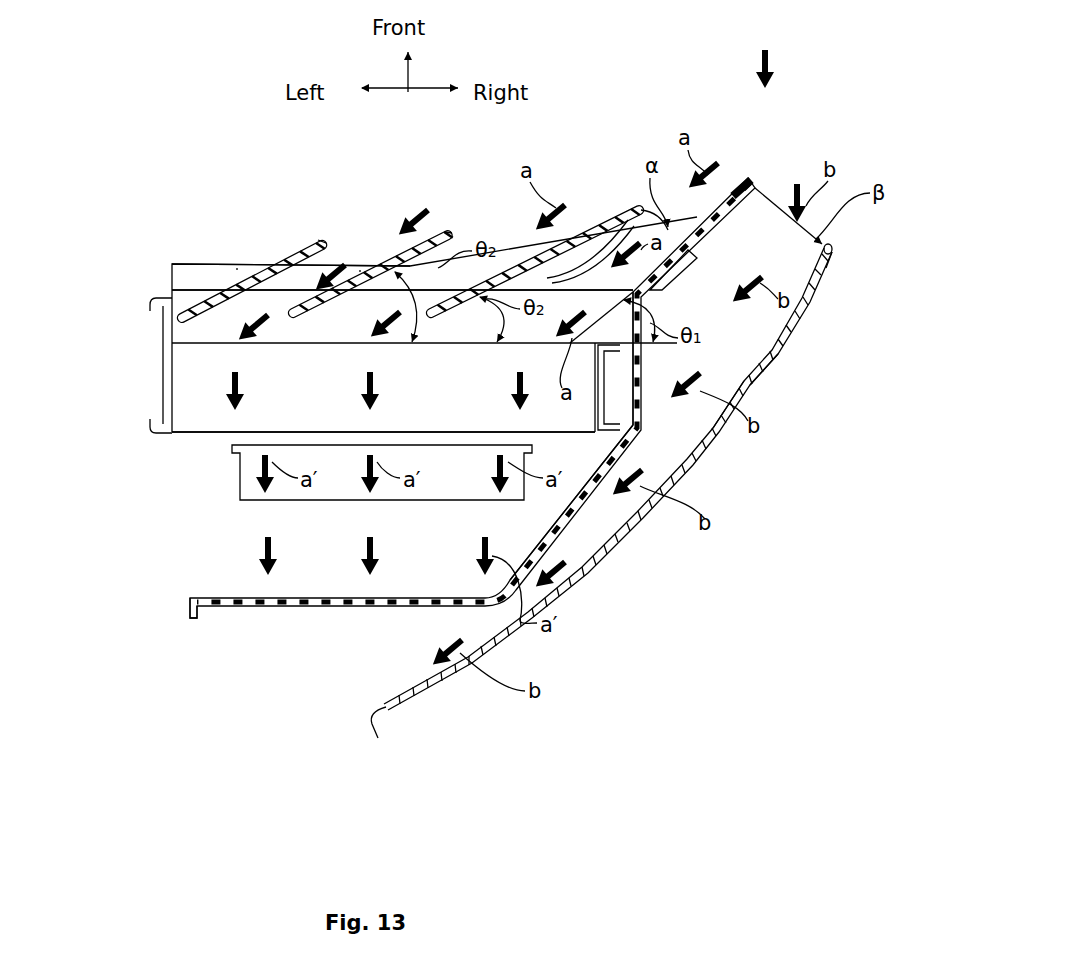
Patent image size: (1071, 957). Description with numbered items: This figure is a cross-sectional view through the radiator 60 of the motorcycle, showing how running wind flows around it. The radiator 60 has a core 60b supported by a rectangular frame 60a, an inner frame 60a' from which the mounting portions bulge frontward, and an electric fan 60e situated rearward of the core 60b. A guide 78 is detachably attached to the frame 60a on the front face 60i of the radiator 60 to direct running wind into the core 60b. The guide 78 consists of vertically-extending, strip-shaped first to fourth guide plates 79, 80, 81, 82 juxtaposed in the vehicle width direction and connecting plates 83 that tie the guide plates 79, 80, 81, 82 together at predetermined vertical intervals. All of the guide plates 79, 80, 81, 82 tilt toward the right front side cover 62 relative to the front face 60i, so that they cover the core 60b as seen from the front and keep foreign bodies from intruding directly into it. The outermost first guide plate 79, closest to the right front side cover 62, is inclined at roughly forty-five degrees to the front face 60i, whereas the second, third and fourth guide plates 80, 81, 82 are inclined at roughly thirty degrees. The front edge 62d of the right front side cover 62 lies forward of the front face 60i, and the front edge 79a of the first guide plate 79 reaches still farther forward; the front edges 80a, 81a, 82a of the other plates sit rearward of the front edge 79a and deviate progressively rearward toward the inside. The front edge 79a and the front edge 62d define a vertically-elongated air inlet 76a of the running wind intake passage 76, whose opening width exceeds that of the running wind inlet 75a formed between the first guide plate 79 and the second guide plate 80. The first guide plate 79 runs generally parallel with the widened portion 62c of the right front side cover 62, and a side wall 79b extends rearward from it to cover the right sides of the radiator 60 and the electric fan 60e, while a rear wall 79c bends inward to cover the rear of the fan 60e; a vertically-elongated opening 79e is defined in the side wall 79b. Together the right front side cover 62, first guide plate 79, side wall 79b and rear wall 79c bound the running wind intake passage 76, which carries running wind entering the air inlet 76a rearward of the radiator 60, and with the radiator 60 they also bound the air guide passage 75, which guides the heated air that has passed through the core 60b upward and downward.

The radiator 60 is at (158, 410).
The frame 60a is at (645, 387).
The inner frame 60a' is at (113, 365).
The core 60b is at (182, 438).
The electric fan 60e is at (250, 501).
The front face 60i is at (327, 341).
The right front side cover 62 is at (700, 455).
The widened portion 62c is at (797, 329).
The front edge 62d is at (838, 248).
The air guide passage 75 is at (312, 572).
The running wind inlet 75a is at (590, 254).
The running wind intake passage 76 is at (750, 376).
The air inlet 76a is at (838, 268).
The guide 78 is at (204, 260).
The first guide plate 79 is at (745, 177).
The front edge 79a is at (757, 184).
The side wall 79b is at (632, 490).
The rear wall 79c is at (250, 608).
The opening 79e is at (644, 376).
The second guide plate 80 is at (600, 218).
The front edge 80a is at (641, 211).
The third guide plate 81 is at (437, 231).
The front edge 81a is at (441, 231).
The fourth guide plate 82 is at (279, 256).
The front edge 82a is at (326, 245).
The connecting plates 83 is at (237, 268).